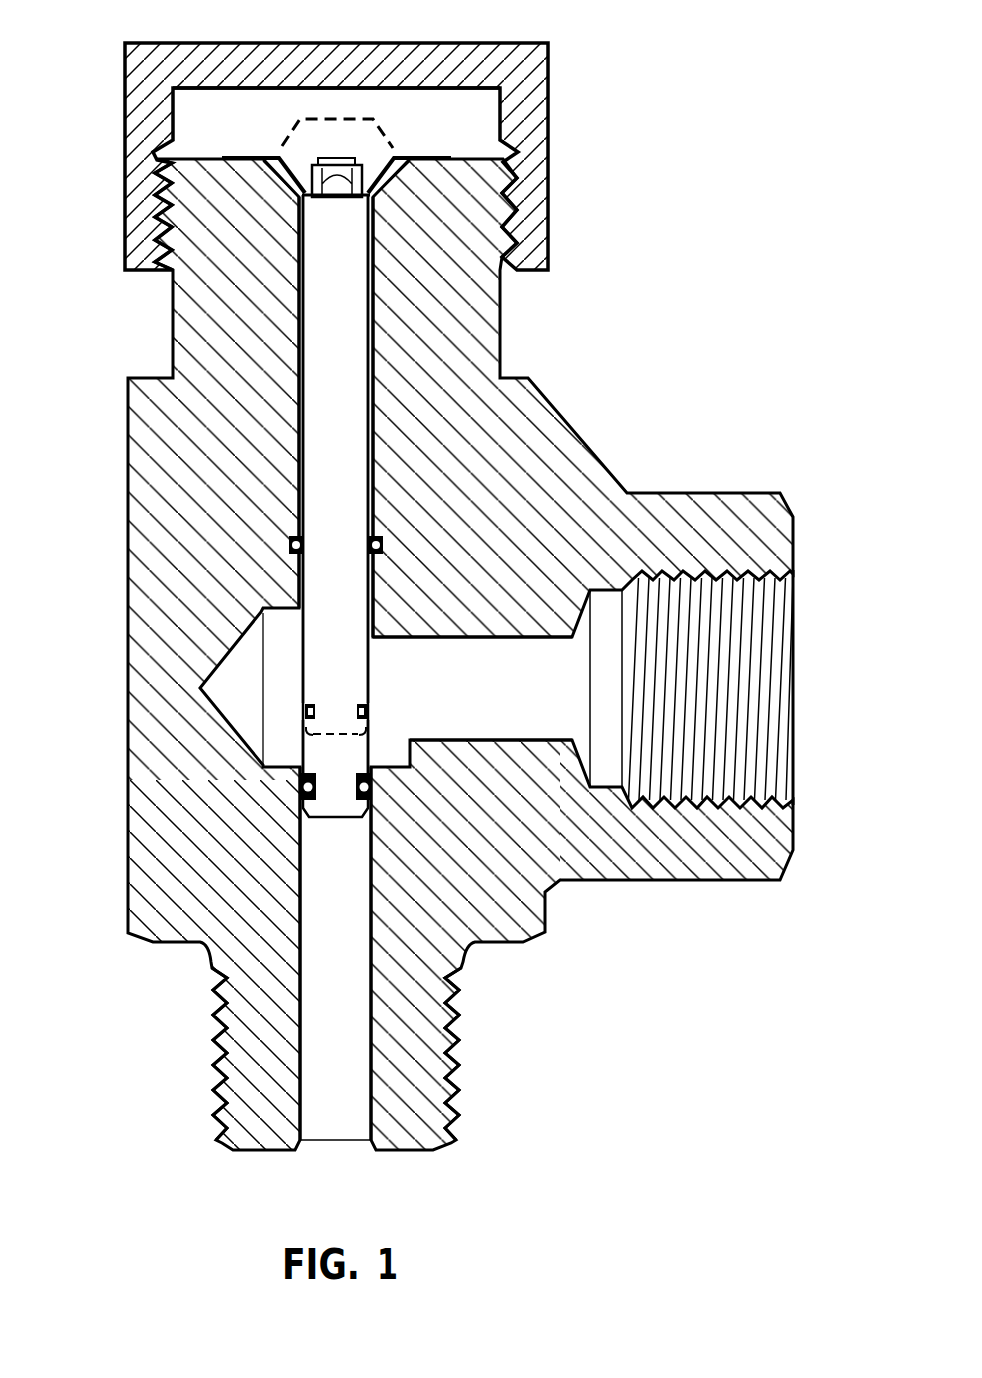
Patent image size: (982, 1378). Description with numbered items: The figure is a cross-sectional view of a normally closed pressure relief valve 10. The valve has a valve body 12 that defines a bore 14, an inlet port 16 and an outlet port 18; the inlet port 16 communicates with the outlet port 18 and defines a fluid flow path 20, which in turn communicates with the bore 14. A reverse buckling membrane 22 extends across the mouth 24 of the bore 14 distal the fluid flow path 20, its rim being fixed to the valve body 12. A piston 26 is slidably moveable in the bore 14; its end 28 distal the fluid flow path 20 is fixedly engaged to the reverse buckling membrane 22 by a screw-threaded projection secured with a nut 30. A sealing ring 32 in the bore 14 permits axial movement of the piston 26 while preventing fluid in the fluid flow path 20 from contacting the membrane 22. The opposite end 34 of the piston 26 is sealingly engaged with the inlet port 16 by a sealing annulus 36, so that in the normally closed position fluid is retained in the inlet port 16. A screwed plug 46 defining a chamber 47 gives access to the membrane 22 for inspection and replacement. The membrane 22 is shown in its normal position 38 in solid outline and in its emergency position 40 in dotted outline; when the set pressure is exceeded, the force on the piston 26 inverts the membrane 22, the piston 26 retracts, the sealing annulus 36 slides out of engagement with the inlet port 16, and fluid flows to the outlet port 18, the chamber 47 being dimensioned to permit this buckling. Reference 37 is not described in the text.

The pressure relief valve 10 is at (742, 341).
The valve body 12 is at (537, 422).
The bore 14 is at (300, 487).
The inlet port 16 is at (354, 1002).
The outlet port 18 is at (482, 702).
The fluid flow path 20 is at (332, 1065).
The reverse buckling membrane 22 is at (422, 155).
The mouth 24 is at (390, 193).
The piston 26 is at (333, 443).
The end 28 is at (333, 317).
The nut 30 is at (340, 180).
The sealing ring 32 is at (293, 545).
The end 34 is at (340, 762).
The sealing annulus 36 is at (300, 787).
The piston end 37 is at (347, 820).
The normal position 38 is at (283, 172).
The emergency position 40 is at (288, 130).
The screwed plug 46 is at (160, 73).
The chamber 47 is at (232, 132).